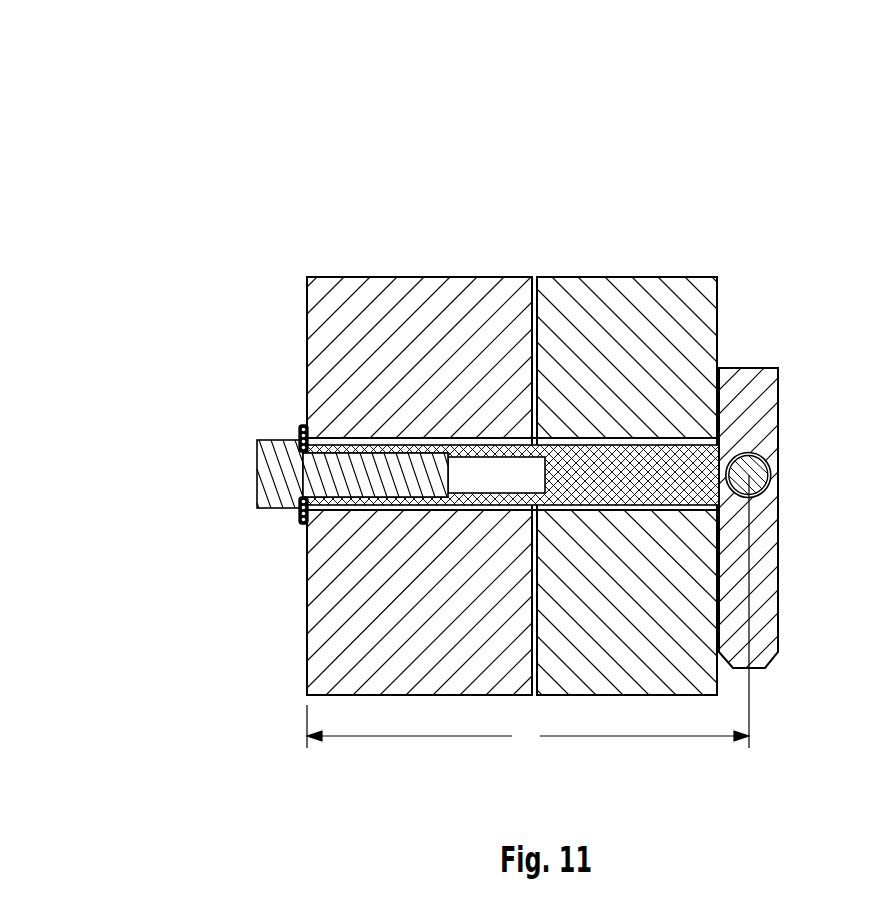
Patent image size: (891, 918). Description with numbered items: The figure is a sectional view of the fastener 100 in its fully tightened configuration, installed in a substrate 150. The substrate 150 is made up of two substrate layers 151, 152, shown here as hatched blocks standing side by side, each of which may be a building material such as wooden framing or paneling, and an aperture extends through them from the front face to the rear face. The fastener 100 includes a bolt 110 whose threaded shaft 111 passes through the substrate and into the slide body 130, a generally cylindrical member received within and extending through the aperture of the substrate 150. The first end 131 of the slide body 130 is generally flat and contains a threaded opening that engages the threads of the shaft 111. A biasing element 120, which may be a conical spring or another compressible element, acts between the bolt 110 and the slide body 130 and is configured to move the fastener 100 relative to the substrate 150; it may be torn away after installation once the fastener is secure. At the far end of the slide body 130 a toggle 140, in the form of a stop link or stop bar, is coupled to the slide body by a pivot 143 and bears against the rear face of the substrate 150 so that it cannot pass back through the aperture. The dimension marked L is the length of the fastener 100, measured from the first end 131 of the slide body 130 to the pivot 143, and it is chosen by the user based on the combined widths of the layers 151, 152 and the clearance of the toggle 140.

The fastener 100 is at (228, 132).
The bolt 110 is at (258, 433).
The shaft 111 is at (368, 484).
The biasing element 120 is at (302, 415).
The slide body 130 is at (418, 437).
The first end 131 is at (313, 509).
The toggle 140 is at (793, 453).
The pivot 143 is at (772, 481).
The substrate 150 is at (505, 193).
The substrate layer 151 is at (350, 303).
The substrate layer 152 is at (583, 303).